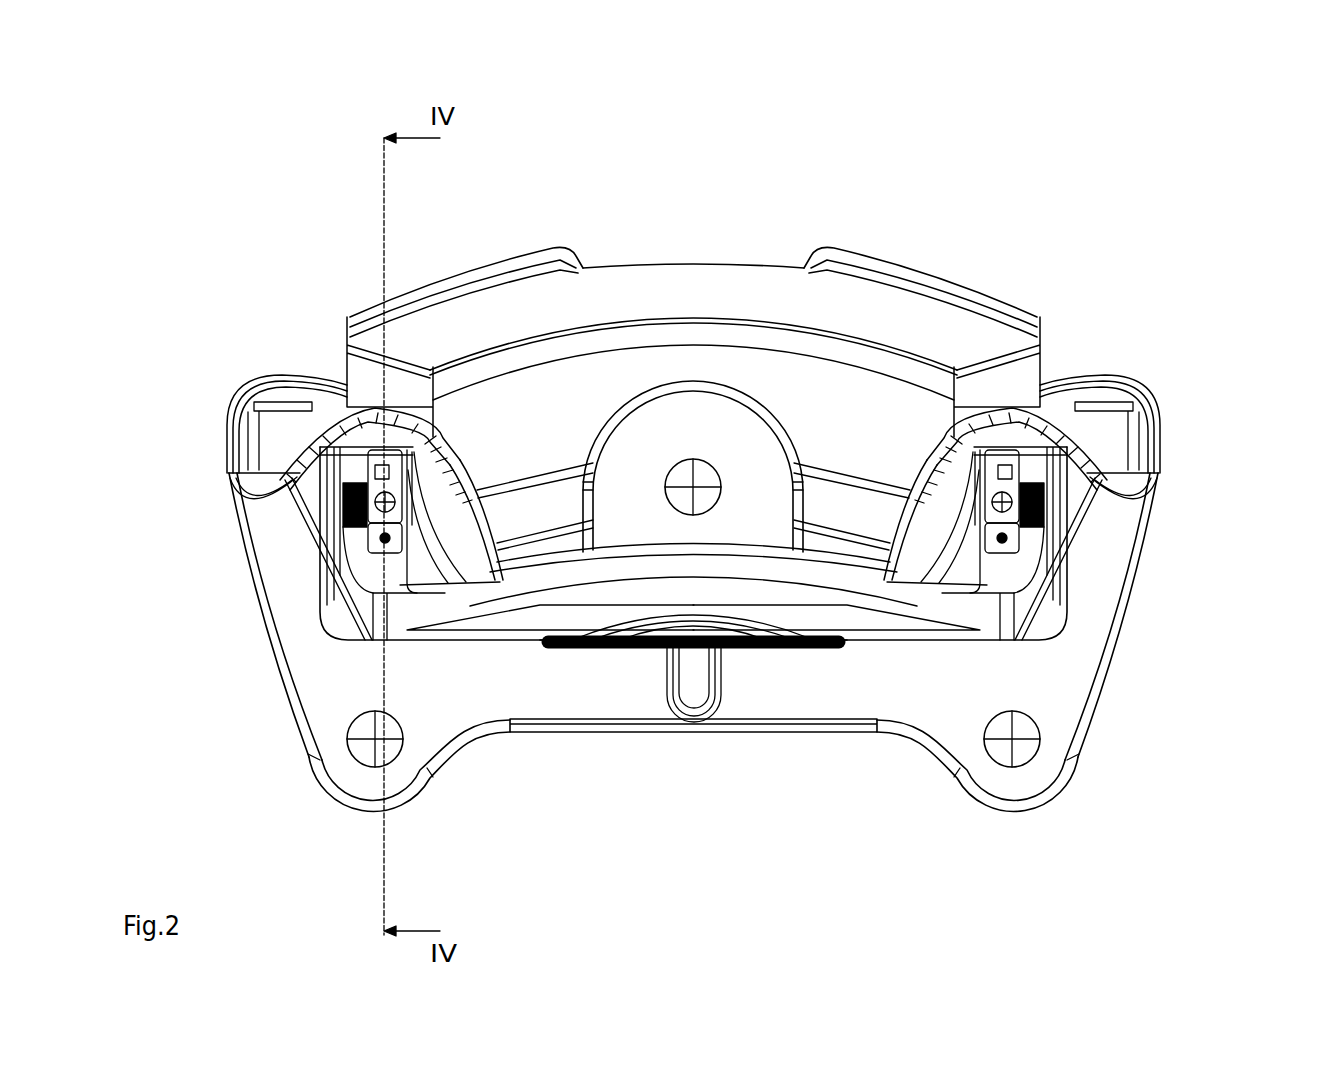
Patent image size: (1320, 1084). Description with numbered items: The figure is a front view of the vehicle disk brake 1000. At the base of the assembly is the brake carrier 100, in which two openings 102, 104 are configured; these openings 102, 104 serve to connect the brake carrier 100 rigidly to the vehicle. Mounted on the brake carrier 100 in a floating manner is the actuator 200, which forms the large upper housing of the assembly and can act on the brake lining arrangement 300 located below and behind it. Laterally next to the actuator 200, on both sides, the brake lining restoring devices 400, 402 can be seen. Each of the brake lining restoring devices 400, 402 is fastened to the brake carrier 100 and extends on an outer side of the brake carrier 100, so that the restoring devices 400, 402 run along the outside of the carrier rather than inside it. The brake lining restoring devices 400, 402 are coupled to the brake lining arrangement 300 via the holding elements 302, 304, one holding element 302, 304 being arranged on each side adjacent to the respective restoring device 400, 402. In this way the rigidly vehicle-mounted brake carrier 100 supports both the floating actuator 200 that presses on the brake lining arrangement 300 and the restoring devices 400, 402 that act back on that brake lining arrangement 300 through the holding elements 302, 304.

The vehicle disk brake 1000 is at (1092, 183).
The brake carrier 100 is at (471, 742).
The opening 102 is at (352, 755).
The opening 104 is at (1035, 755).
The actuator 200 is at (682, 263).
The brake lining arrangement 300 is at (667, 530).
The holding element 302 is at (352, 518).
The holding element 304 is at (1041, 513).
The brake lining restoring device 400 is at (357, 538).
The brake lining restoring device 402 is at (1024, 539).